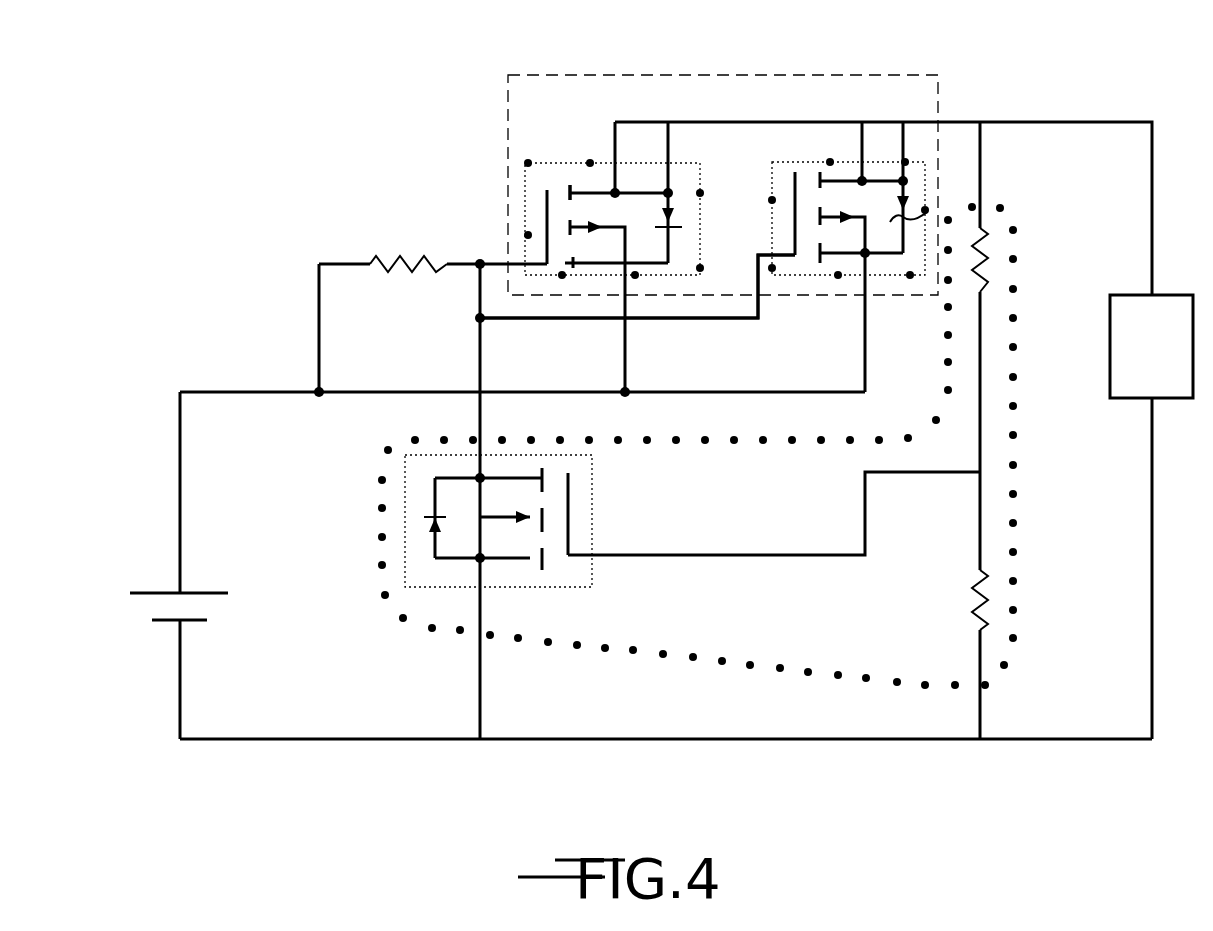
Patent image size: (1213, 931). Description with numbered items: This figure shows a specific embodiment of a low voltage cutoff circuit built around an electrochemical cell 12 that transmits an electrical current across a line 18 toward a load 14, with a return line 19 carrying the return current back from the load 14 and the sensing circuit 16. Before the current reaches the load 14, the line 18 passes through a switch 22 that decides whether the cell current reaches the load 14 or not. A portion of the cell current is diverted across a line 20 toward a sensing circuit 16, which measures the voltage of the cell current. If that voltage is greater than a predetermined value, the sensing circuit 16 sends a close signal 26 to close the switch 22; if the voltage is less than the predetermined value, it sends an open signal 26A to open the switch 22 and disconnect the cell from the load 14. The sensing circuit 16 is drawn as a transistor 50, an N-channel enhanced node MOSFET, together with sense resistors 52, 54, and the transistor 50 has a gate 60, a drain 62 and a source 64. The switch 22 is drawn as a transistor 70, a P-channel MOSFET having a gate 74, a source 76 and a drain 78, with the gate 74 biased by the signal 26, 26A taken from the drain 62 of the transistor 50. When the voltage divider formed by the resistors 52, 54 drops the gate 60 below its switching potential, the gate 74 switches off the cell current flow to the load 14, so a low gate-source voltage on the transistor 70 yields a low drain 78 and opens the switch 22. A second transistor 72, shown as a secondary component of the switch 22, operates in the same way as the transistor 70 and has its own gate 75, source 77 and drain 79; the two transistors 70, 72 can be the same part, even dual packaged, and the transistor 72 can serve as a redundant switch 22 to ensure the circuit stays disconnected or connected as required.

The electrochemical cell 12 is at (140, 600).
The load 14 is at (1168, 358).
The sensing circuit 16 is at (750, 668).
The line 18 is at (285, 390).
The return line 19 is at (938, 740).
The line 20 is at (985, 205).
The switch 22 is at (733, 75).
The close signal 26 is at (478, 358).
The open signal 26A is at (567, 294).
The transistor 50 is at (495, 590).
The sense resistor 52 is at (988, 265).
The sense resistor 54 is at (988, 595).
The gate 60 is at (568, 520).
The drain 62 is at (542, 470).
The source 64 is at (548, 560).
The transistor 70 is at (568, 162).
The transistor 72 is at (845, 163).
The gate 74 is at (547, 222).
The gate 75 is at (795, 198).
The source 76 is at (560, 195).
The source 77 is at (820, 178).
The drain 78 is at (565, 190).
The drain 79 is at (830, 262).